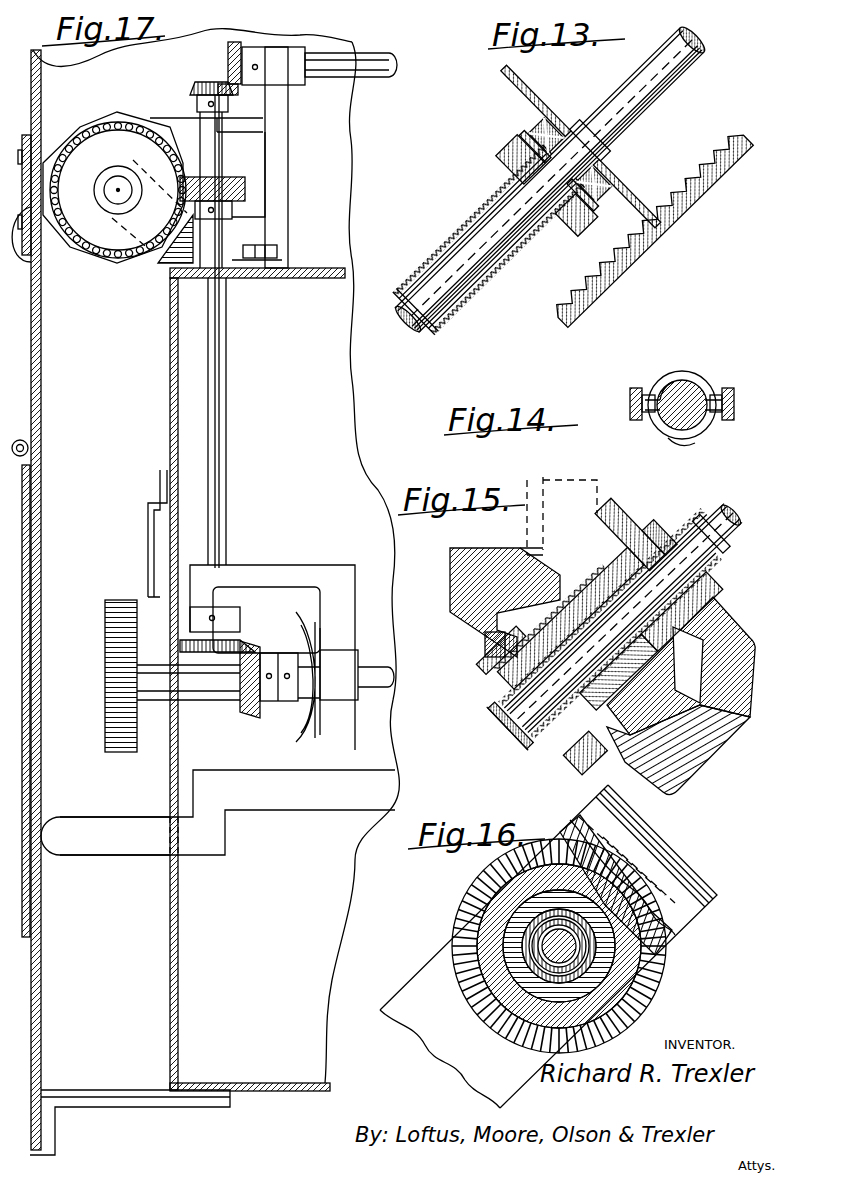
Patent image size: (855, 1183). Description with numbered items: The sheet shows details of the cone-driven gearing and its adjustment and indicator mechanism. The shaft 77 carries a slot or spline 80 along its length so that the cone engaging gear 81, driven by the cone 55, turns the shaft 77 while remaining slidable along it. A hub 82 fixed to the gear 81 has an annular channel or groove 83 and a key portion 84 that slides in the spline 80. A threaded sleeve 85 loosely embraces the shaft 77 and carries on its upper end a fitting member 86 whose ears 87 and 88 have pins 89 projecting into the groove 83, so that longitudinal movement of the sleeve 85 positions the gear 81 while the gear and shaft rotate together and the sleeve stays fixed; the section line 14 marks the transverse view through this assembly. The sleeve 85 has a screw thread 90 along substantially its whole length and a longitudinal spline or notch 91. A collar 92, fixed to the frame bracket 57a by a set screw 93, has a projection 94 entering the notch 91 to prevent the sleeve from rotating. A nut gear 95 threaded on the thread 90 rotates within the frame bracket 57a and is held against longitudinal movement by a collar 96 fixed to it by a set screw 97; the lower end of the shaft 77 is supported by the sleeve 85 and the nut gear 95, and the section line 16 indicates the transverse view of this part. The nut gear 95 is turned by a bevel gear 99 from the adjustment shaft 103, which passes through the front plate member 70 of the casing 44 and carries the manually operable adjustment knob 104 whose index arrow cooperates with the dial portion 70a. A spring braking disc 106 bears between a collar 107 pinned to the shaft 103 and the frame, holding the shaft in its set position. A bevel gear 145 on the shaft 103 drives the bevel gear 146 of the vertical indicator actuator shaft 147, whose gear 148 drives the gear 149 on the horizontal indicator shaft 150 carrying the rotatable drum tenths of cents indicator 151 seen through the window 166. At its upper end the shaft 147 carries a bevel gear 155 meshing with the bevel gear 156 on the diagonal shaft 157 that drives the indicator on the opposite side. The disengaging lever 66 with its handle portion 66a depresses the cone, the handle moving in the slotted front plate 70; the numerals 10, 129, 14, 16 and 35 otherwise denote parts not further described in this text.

In FIG. 17, the housing wall 10 is at (40, 396).
In FIG. 17, the casing 44 is at (162, 355).
In FIG. 17, the shifting or disengaging lever 66 is at (288, 798).
In FIG. 17, the handle portion 66a is at (99, 838).
In FIG. 17, the front plate member 70 is at (170, 412).
In FIG. 17, the dial portion 70a is at (143, 557).
In FIG. 17, the adjustment shaft 103 is at (213, 688).
In FIG. 17, the manually operable adjustment knob 104 is at (115, 604).
In FIG. 17, the spring braking disc 106 is at (309, 733).
In FIG. 17, the collar 107 is at (286, 658).
In FIG. 17, the guide rail 129 is at (36, 665).
In FIG. 17, the bevel gear 145 is at (248, 716).
In FIG. 17, the bevel gear 146 is at (246, 633).
In FIG. 17, the vertical indicator actuator shaft 147 is at (215, 412).
In FIG. 17, the gear 148 is at (246, 189).
In FIG. 17, the gear 149 is at (143, 118).
In FIG. 17, the horizontal indicator shaft 150 is at (135, 164).
In FIG. 17, the rotatable drum tenths of cents indicator 151 is at (136, 268).
In FIG. 17, the bevel gear 155 is at (201, 82).
In FIG. 17, the bevel gear 156 is at (262, 31).
In FIG. 17, the shaft 157 is at (352, 56).
In FIG. 17, the window 166 is at (42, 266).
In FIG. 13, the section line 14 is at (532, 103).
In FIG. 13, the cone 55 is at (709, 191).
In FIG. 13, the shaft 77 is at (653, 100).
In FIG. 14, the shaft 77 is at (697, 378).
In FIG. 15, the shaft 77 is at (720, 514).
In FIG. 16, the shaft 77 is at (614, 924).
In FIG. 13, the slot or spline 80 is at (620, 83).
In FIG. 16, the slot or spline 80 is at (556, 948).
In FIG. 13, the cone engaging gear 81 is at (631, 187).
In FIG. 13, the hub 82 is at (574, 120).
In FIG. 14, the hub 82 is at (681, 382).
In FIG. 13, the annular channel or groove 83 is at (596, 228).
In FIG. 14, the annular channel or groove 83 is at (688, 438).
In FIG. 13, the key portion 84 is at (604, 150).
In FIG. 14, the key portion 84 is at (667, 391).
In FIG. 13, the threaded sleeve 85 is at (462, 233).
In FIG. 16, the threaded sleeve 85 is at (596, 953).
In FIG. 13, the fitting member 86 is at (508, 158).
In FIG. 13, the ear 87 is at (530, 143).
In FIG. 14, the ear 87 is at (640, 422).
In FIG. 14, the ear 88 is at (735, 388).
In FIG. 14, the pins 89 is at (647, 395).
In FIG. 13, the screw thread 90 is at (417, 274).
In FIG. 15, the screw thread 90 is at (497, 697).
In FIG. 13, the spline or notch 91 is at (404, 279).
In FIG. 15, the spline or notch 91 is at (691, 509).
In FIG. 15, the frame slot 16 is at (579, 526).
In FIG. 15, the collar ring 35 is at (725, 551).
In FIG. 15, the frame bracket 57a is at (694, 758).
In FIG. 16, the frame bracket 57a is at (467, 1052).
In FIG. 15, the collar 92 is at (704, 596).
In FIG. 16, the collar 92 is at (590, 990).
In FIG. 15, the set screw 93 is at (617, 517).
In FIG. 16, the set screw 93 is at (522, 980).
In FIG. 15, the projection 94 is at (648, 535).
In FIG. 16, the projection 94 is at (547, 953).
In FIG. 15, the nut gear 95 is at (505, 660).
In FIG. 16, the nut gear 95 is at (655, 992).
In FIG. 15, the collar 96 is at (587, 752).
In FIG. 15, the set screw 97 is at (485, 638).
In FIG. 15, the bevel gear 99 is at (586, 467).